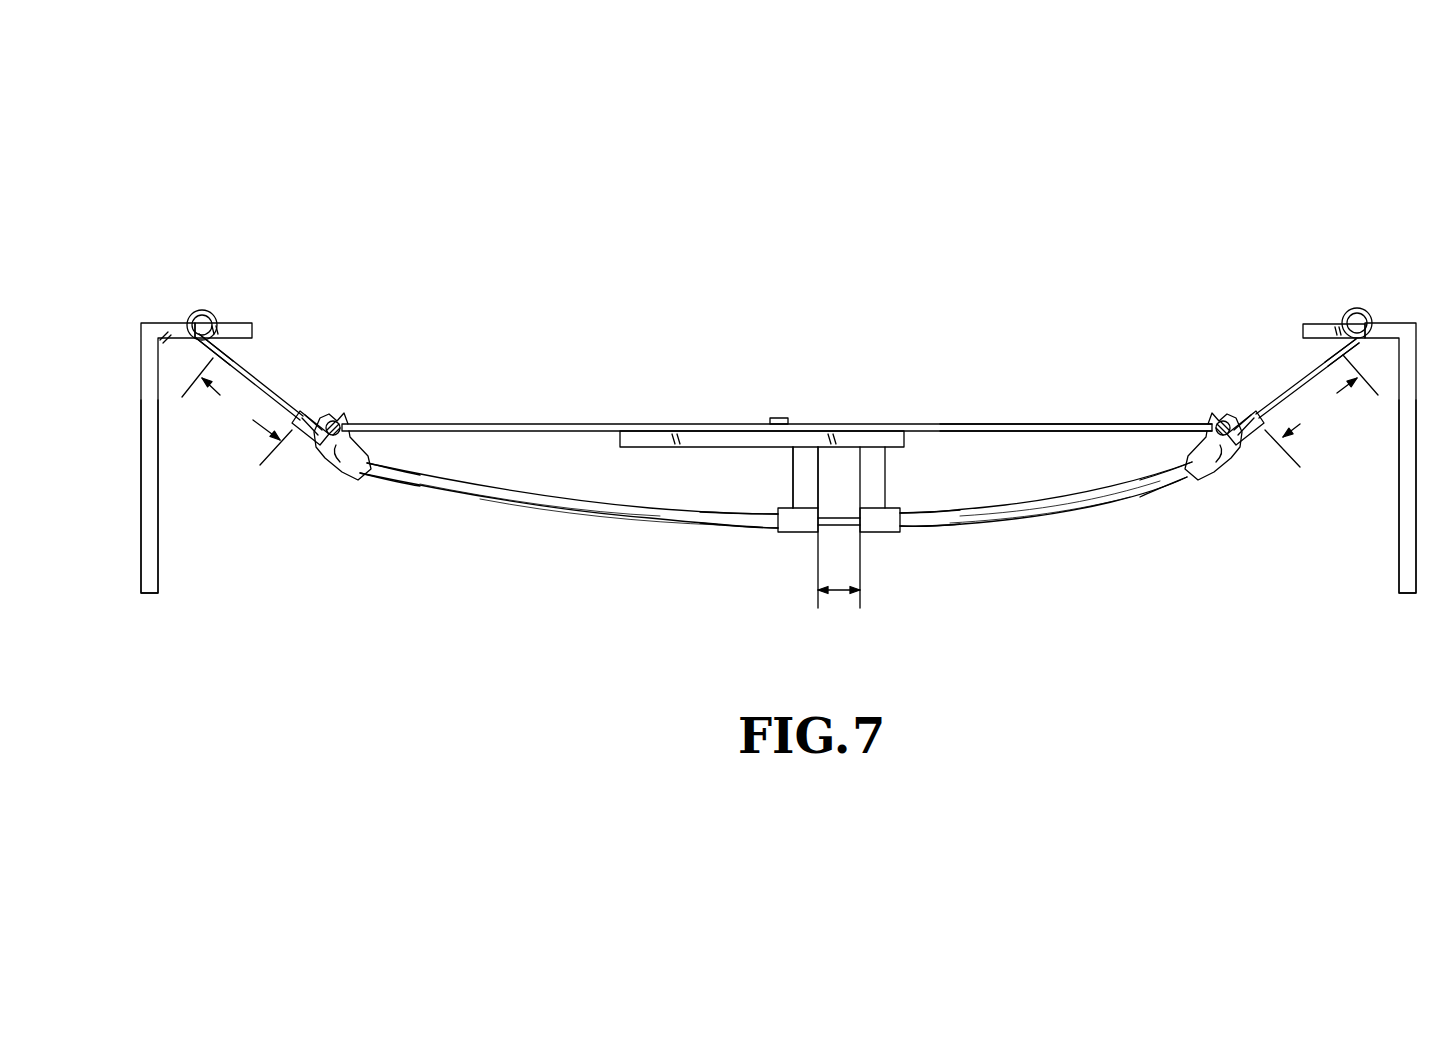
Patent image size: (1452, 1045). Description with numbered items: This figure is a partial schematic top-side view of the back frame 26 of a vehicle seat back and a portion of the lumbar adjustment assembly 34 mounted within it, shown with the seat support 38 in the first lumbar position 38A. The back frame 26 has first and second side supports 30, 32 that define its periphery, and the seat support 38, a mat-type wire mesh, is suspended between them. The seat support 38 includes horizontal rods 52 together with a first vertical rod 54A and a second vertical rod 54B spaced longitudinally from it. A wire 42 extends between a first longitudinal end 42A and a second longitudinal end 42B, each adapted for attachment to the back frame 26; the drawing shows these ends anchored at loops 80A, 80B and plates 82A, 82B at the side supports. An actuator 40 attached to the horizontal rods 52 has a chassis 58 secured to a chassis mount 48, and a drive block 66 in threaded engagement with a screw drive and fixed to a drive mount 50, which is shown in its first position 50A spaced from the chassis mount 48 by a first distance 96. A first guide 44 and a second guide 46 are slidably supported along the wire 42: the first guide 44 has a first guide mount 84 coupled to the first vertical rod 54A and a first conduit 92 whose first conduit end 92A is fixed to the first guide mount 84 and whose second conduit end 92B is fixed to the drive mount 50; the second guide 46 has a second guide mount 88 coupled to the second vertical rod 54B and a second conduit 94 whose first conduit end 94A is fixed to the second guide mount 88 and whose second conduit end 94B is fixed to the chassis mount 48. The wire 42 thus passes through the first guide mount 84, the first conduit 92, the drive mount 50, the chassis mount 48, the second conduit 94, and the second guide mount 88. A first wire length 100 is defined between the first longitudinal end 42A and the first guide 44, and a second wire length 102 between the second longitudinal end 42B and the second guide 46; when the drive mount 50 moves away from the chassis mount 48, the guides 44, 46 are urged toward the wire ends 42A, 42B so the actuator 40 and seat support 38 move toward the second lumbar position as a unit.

The back frame 26 is at (141, 323).
The first side support 30 is at (152, 461).
The second side support 32 is at (1408, 462).
The assembly 34 is at (753, 372).
The seat support 38 is at (777, 381).
The first lumbar position 38A is at (466, 420).
The actuator 40 is at (857, 432).
The wire 42 is at (276, 394).
The first longitudinal end 42A is at (228, 347).
The second longitudinal end 42B is at (1328, 347).
The first guide 44 is at (541, 508).
The second guide 46 is at (1076, 514).
The chassis mount 48 is at (882, 522).
The drive mount 50 is at (759, 551).
The first position 50A is at (798, 522).
The horizontal rods 52 is at (1032, 428).
The first vertical rod 54A is at (336, 417).
The second vertical rod 54B is at (1220, 418).
The chassis 58 is at (688, 436).
The drive block 66 is at (805, 465).
The first eye loop 80A is at (197, 312).
The second eye loop 80B is at (1360, 312).
The first anchor plate 82A is at (232, 330).
The second anchor plate 82B is at (1337, 330).
The first guide mount 84 is at (327, 447).
The second guide mount 88 is at (1232, 450).
The first conduit 92 is at (538, 503).
The first conduit end 92A is at (377, 480).
The second conduit end 92B is at (770, 518).
The second conduit 94 is at (1002, 515).
The first conduit end 94A is at (1175, 486).
The second conduit end 94B is at (935, 523).
The first distance 96 is at (838, 595).
The first wire length 100 is at (237, 411).
The second wire length 102 is at (1321, 411).